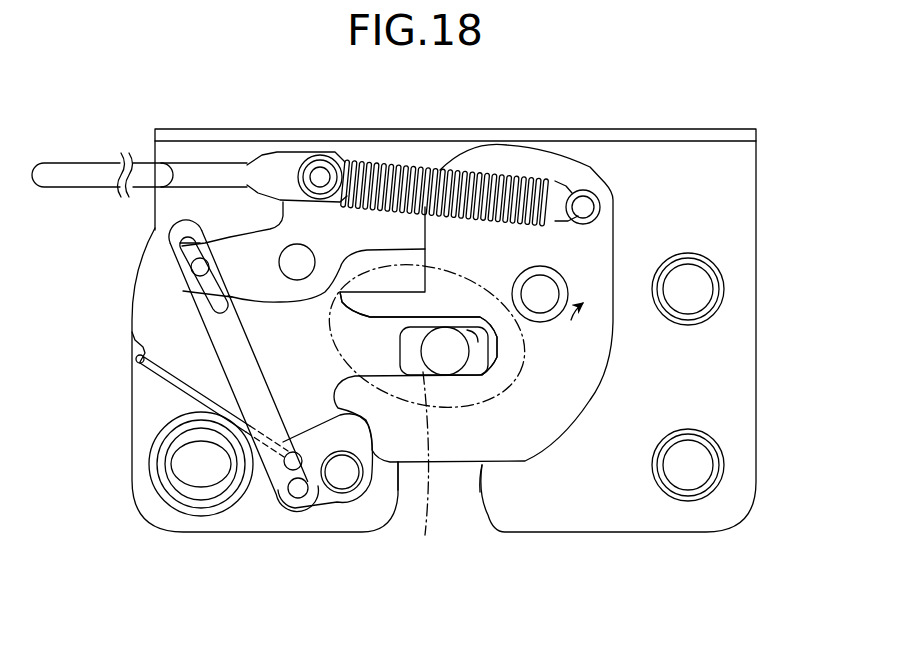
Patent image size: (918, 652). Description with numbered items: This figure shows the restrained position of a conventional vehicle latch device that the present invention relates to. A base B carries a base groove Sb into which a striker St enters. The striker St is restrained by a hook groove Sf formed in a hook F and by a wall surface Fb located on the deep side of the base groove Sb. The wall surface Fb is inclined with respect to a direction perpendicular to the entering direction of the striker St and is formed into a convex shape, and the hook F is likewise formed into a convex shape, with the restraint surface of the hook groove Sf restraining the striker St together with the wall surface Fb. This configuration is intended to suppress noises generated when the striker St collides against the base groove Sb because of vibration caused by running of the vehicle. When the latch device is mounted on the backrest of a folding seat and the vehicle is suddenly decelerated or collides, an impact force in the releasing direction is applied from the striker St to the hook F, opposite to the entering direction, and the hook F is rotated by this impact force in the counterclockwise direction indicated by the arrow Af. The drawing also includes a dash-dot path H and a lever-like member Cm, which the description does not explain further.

The base B is at (613, 536).
The hook F is at (618, 235).
The wall surface Fb is at (490, 316).
The striker St is at (452, 356).
The hook groove Sf is at (400, 352).
The striker movement path H is at (426, 401).
The arrow Af is at (553, 333).
The base groove Sb is at (485, 488).
The cam member Cm is at (284, 219).